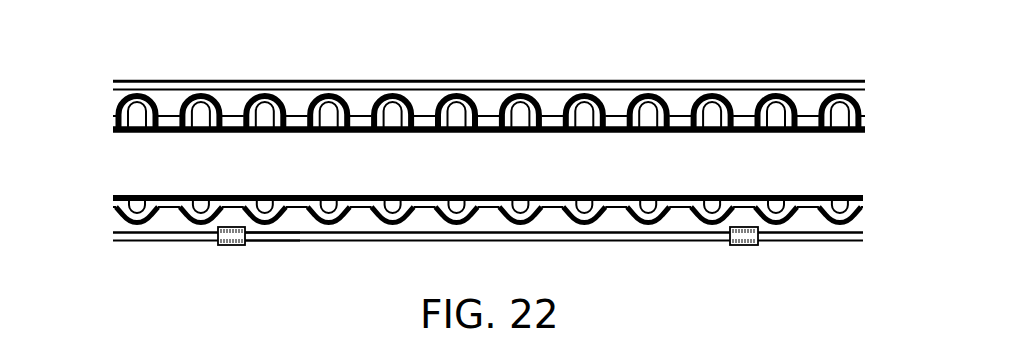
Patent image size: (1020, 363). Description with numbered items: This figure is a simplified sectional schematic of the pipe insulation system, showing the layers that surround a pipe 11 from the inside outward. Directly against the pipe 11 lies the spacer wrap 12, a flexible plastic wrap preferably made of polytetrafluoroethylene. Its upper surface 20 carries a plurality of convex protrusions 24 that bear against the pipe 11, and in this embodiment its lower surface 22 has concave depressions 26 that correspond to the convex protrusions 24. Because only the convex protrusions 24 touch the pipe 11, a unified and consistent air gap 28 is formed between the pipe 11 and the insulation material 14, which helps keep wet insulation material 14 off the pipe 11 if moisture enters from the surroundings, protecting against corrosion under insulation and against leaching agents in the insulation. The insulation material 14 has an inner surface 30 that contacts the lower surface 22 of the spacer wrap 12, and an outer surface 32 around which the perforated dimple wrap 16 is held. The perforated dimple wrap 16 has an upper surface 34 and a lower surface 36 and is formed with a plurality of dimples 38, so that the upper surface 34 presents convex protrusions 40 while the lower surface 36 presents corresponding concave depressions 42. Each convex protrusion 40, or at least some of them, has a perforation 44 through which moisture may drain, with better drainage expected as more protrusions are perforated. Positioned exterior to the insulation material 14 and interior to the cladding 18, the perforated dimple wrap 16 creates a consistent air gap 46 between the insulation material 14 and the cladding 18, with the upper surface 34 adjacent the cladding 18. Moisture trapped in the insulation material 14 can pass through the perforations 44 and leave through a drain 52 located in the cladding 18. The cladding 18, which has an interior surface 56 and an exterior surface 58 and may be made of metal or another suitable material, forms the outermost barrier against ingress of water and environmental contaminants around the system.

The pipe 11 is at (164, 82).
The spacer wrap 12 is at (117, 117).
The insulation material 14 is at (155, 147).
The perforated dimple wrap 16 is at (117, 215).
The cladding 18 is at (173, 240).
The upper surface 20 is at (680, 116).
The lower surface 22 is at (487, 128).
The convex protrusions 24 is at (416, 104).
The concave depressions 26 is at (836, 108).
The air gap 28 is at (750, 103).
The inner surface 30 is at (818, 133).
The outer surface 32 is at (163, 193).
The upper surface 34 is at (273, 222).
The lower surface 36 is at (360, 202).
The dimples 38 is at (698, 218).
The convex protrusions 40 is at (632, 218).
The concave depressions 42 is at (838, 201).
The perforation 44 is at (775, 226).
The air gap 46 is at (552, 218).
The drain 52 is at (233, 247).
The interior surface 56 is at (115, 231).
The exterior surface 58 is at (277, 244).